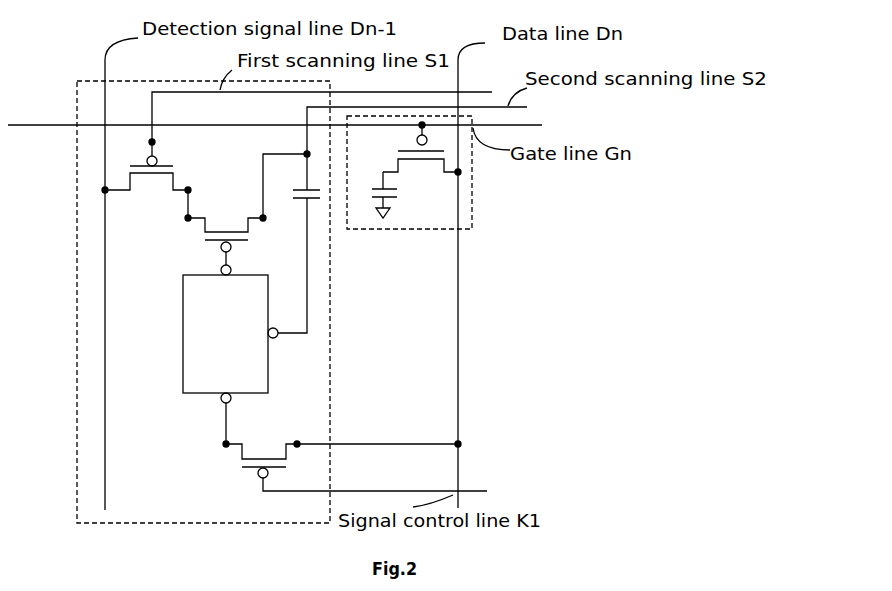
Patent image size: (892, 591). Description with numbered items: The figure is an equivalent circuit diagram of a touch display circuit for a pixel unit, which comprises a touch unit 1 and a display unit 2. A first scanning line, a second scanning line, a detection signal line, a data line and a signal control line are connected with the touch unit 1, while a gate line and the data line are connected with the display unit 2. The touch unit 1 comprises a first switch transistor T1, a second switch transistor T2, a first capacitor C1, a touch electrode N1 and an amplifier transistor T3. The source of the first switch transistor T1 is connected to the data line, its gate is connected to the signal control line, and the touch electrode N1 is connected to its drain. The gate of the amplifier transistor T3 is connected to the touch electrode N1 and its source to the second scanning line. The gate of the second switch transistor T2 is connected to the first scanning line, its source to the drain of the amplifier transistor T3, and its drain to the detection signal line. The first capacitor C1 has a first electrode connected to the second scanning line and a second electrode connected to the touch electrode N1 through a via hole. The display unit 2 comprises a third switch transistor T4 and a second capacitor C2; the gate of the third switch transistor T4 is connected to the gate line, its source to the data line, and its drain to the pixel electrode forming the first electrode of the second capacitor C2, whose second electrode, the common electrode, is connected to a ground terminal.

The touch unit 1 is at (76, 182).
The display unit 2 is at (468, 213).
The first switch transistor T1 is at (342, 440).
The second switch transistor T2 is at (146, 172).
The amplifier transistor T3 is at (247, 208).
The third switch transistor T4 is at (422, 155).
The first capacitor C1 is at (299, 245).
The second capacitor C2 is at (379, 201).
The touch electrode N1 is at (236, 334).